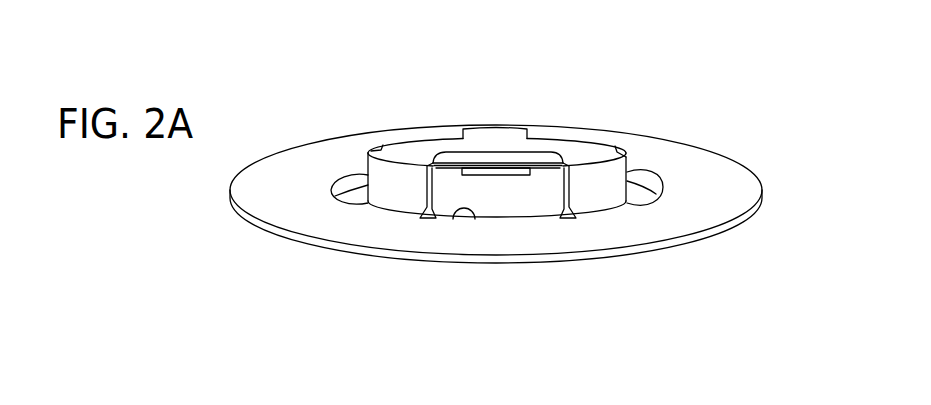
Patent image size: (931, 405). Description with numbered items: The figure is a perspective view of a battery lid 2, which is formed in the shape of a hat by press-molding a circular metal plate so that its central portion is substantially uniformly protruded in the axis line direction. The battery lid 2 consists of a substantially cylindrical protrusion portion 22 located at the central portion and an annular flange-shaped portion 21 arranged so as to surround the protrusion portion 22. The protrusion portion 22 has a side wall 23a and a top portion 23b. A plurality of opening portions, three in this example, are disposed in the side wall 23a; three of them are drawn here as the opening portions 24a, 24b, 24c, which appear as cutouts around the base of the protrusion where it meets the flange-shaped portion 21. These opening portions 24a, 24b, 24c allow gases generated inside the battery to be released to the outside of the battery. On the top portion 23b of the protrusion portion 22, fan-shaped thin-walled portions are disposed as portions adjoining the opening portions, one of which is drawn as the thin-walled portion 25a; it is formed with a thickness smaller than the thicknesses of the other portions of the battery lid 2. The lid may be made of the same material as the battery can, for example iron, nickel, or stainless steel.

The battery lid 2 is at (184, 193).
The flange-shaped portion 21 is at (742, 198).
The protrusion portion 22 is at (429, 127).
The side wall 23a is at (617, 172).
The top portion 23b is at (497, 143).
The opening portion 24a is at (452, 221).
The opening portion 24b is at (652, 167).
The opening portion 24c is at (355, 176).
The thin-walled portion 25a is at (521, 174).